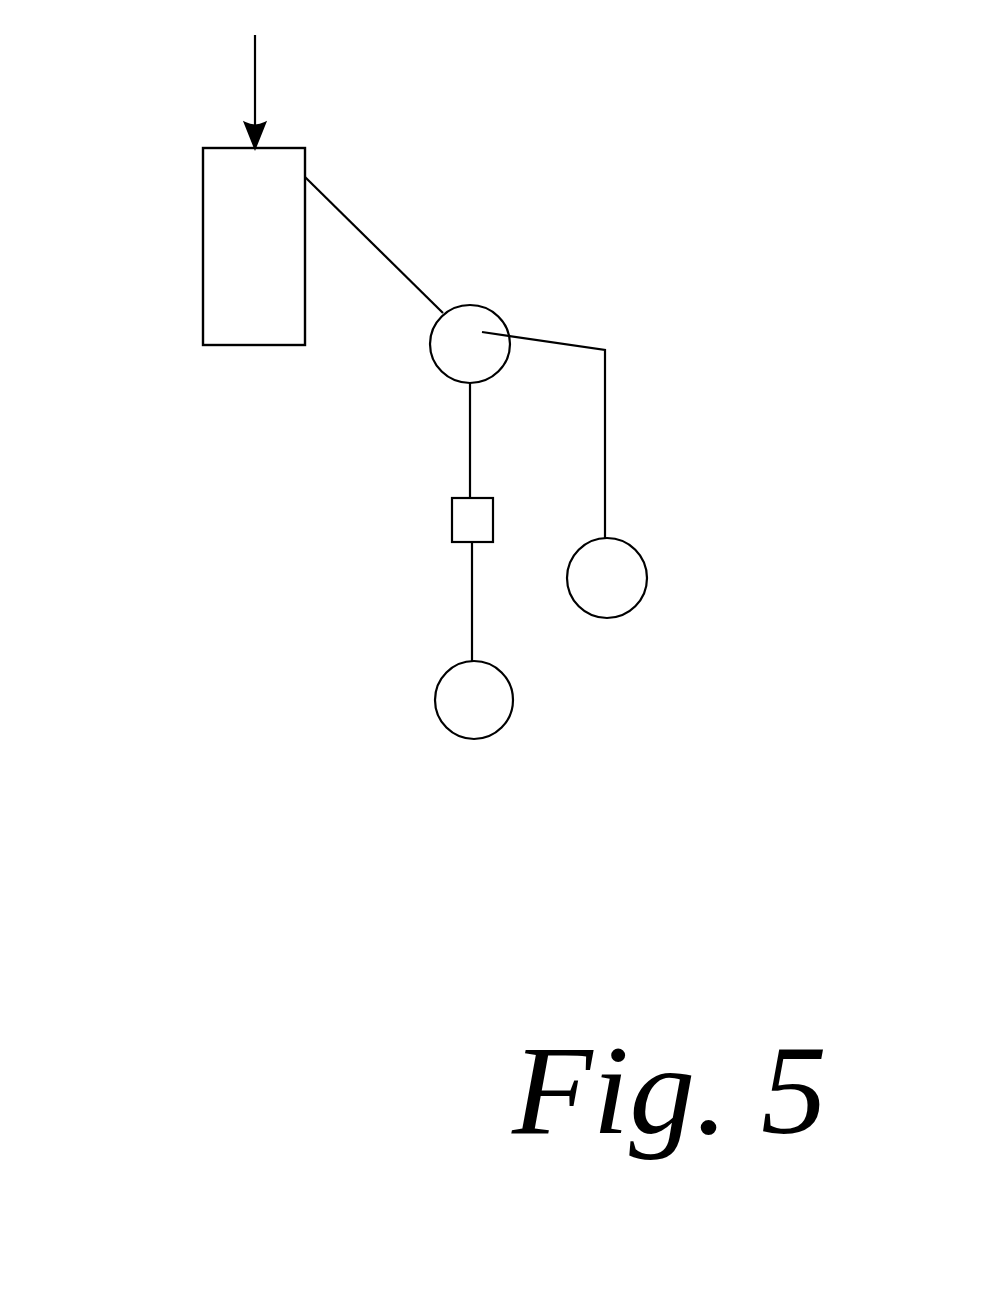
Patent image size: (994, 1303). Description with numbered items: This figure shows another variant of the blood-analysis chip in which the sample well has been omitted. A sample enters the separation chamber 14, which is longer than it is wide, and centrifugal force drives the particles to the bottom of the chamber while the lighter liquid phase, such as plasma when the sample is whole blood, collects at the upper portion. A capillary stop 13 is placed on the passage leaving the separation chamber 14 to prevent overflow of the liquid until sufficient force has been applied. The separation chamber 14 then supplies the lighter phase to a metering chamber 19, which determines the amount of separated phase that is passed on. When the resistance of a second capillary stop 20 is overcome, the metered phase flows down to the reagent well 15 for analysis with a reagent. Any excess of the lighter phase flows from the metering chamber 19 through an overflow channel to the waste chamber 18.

The capillary stop 13 is at (373, 242).
The separation chamber 14 is at (203, 275).
The reagent well 15 is at (450, 733).
The waste chamber 18 is at (648, 578).
The metering chamber 19 is at (433, 362).
The capillary stop 20 is at (447, 532).